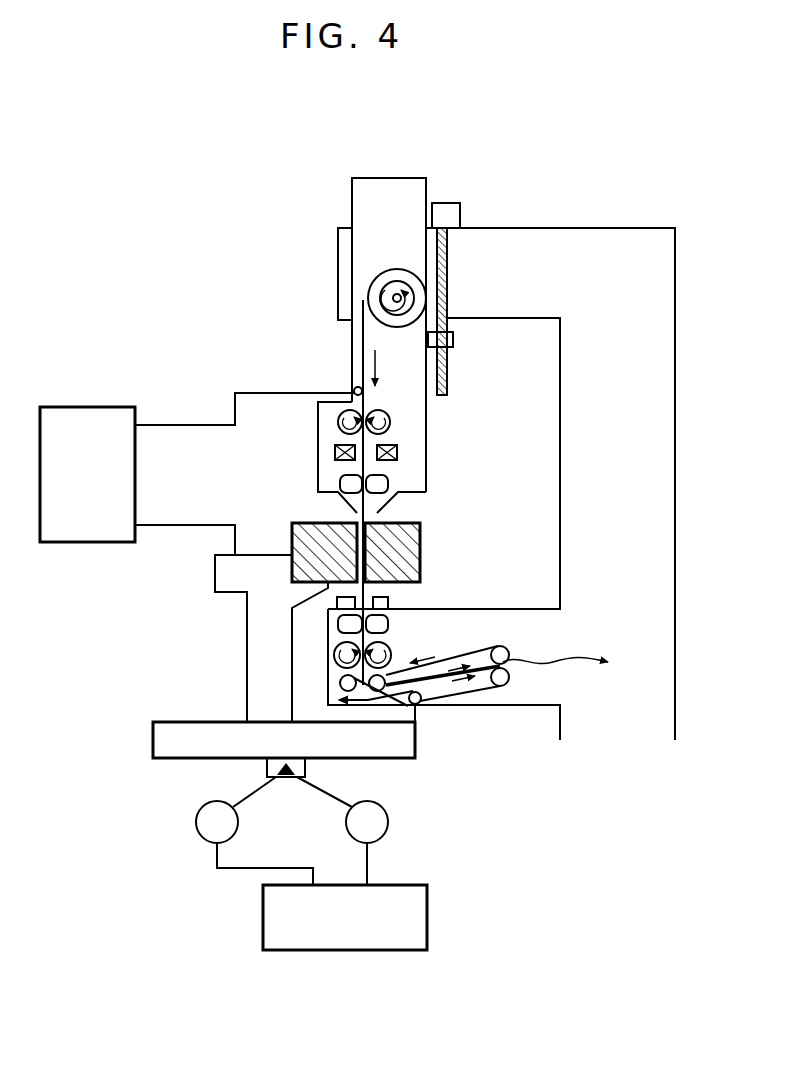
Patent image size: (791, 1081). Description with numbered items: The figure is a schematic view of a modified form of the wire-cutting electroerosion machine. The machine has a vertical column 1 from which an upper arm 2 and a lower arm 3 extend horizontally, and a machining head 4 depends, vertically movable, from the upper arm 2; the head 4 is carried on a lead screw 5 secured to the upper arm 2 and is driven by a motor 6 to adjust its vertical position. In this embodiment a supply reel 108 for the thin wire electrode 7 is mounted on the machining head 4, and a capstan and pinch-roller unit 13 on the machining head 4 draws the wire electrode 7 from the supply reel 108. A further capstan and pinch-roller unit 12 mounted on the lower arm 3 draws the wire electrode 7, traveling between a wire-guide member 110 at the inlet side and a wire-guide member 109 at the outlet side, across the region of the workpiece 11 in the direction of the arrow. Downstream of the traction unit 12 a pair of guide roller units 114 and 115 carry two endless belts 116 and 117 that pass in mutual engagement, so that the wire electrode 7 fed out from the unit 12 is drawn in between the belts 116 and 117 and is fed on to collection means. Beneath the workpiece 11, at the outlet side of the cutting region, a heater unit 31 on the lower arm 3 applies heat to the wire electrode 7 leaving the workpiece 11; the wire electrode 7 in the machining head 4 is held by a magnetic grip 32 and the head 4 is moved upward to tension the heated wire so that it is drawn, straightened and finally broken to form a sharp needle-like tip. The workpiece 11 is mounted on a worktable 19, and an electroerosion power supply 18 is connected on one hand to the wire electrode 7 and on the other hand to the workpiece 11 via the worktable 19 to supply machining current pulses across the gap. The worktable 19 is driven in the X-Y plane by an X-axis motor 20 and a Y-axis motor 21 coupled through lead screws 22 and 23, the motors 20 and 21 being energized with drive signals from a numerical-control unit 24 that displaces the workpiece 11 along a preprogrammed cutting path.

The vertical column 1 is at (665, 452).
The upper arm 2 is at (533, 238).
The lower arm 3 is at (537, 697).
The machining head 4 is at (428, 428).
The lead screw 5 is at (448, 372).
The motor 6 is at (460, 205).
The wire electrode 7 is at (360, 360).
The workpiece 11 is at (422, 538).
The capstan and pinch-roller unit 12 is at (335, 655).
The capstan and pinch-roller unit 13 is at (338, 428).
The electroerosion power supply 18 is at (92, 542).
The worktable 19 is at (246, 680).
The X-axis motor 20 is at (201, 835).
The Y-axis motor 21 is at (390, 832).
The lead screw 22 is at (260, 790).
The lead screw 23 is at (329, 791).
The numerical-control unit 24 is at (427, 922).
The heater unit 31 is at (390, 598).
The magnetic grip 32 is at (333, 453).
The supply reel 108 is at (362, 295).
The wire-guide member 109 is at (390, 625).
The wire-guide member 110 is at (390, 478).
The guide roller unit 114 is at (417, 712).
The guide roller unit 115 is at (520, 680).
The endless belt 116 is at (520, 645).
The endless belt 117 is at (465, 710).